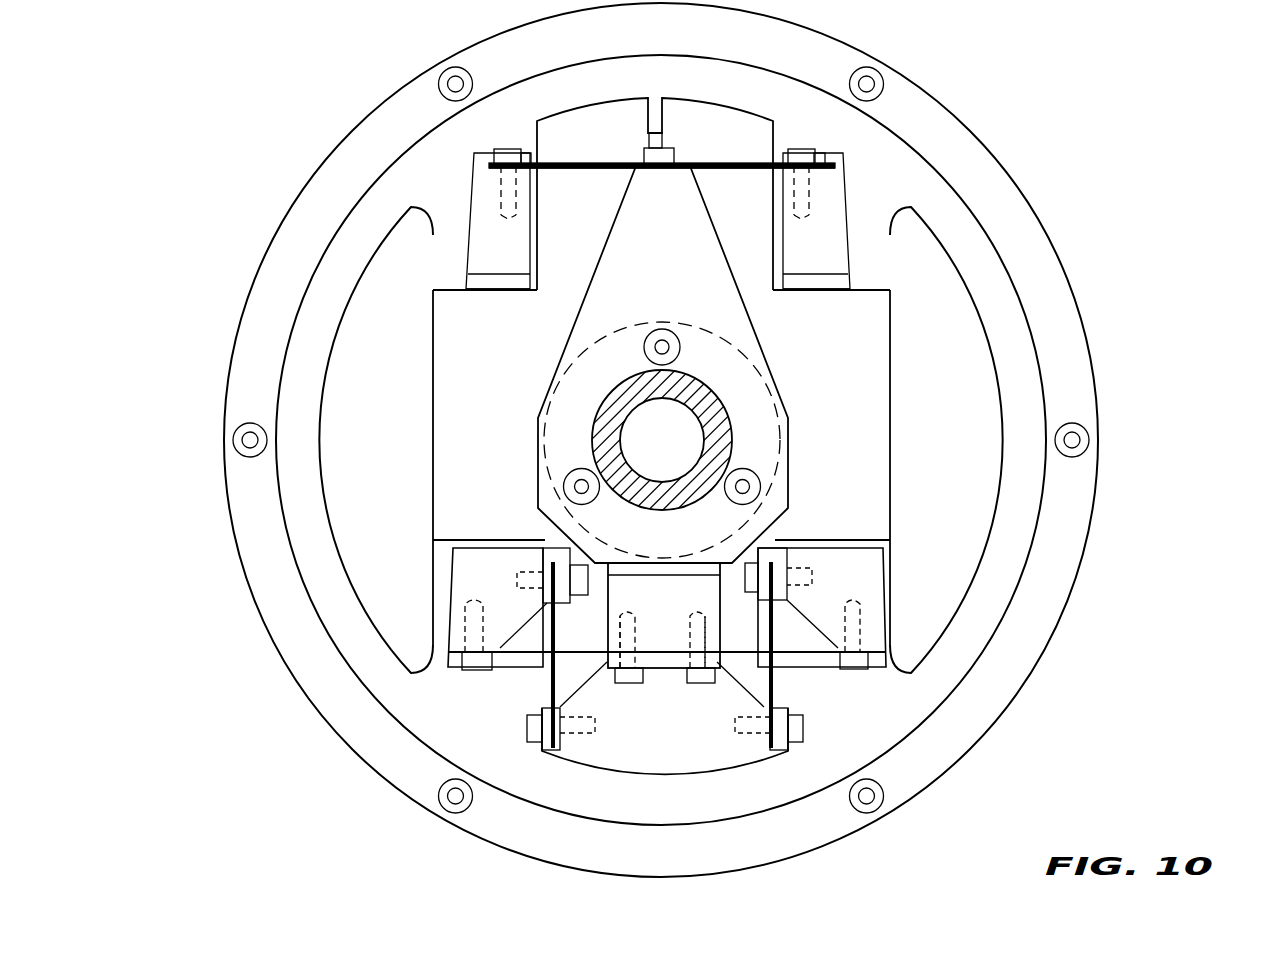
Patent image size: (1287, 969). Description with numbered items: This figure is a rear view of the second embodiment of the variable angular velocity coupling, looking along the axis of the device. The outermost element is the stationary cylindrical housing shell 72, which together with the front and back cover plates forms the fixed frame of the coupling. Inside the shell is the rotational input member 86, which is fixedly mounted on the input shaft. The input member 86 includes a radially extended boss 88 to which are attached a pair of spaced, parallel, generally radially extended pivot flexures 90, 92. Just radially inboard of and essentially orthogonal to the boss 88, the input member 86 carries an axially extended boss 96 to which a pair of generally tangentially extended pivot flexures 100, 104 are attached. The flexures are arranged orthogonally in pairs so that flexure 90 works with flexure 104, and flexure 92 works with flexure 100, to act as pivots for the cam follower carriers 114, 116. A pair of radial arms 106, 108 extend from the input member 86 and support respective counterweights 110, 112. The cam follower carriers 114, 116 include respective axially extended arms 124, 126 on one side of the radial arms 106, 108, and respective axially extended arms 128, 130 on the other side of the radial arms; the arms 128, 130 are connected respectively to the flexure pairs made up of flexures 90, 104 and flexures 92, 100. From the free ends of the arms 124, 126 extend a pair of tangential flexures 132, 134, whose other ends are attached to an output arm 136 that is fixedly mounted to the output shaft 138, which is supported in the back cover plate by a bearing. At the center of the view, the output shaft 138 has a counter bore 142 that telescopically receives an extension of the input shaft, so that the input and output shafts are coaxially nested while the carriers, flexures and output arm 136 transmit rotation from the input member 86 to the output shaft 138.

The stationary cylindrical housing shell 72 is at (990, 708).
The rotational input member 86 is at (698, 124).
The radially extended boss 88 is at (716, 756).
The pivot flexure 90 is at (786, 702).
The pivot flexure 92 is at (551, 693).
The axially extended boss 96 is at (683, 623).
The pivot flexure 100 is at (590, 655).
The pivot flexure 104 is at (744, 656).
The radial arm 106 is at (840, 522).
The radial arm 108 is at (500, 522).
The counterweight 110 is at (908, 462).
The counterweight 112 is at (416, 490).
The cam follower carrier 114 is at (848, 204).
The cam follower carrier 116 is at (470, 196).
The axially extended arm 124 is at (844, 267).
The axially extended arm 126 is at (522, 267).
The axially extended arm 128 is at (827, 622).
The axially extended arm 130 is at (503, 640).
The tangential flexure 132 is at (738, 170).
The tangential flexure 134 is at (600, 170).
The output arm 136 is at (756, 332).
The output shaft 138 is at (722, 446).
The counter bore 142 is at (656, 470).